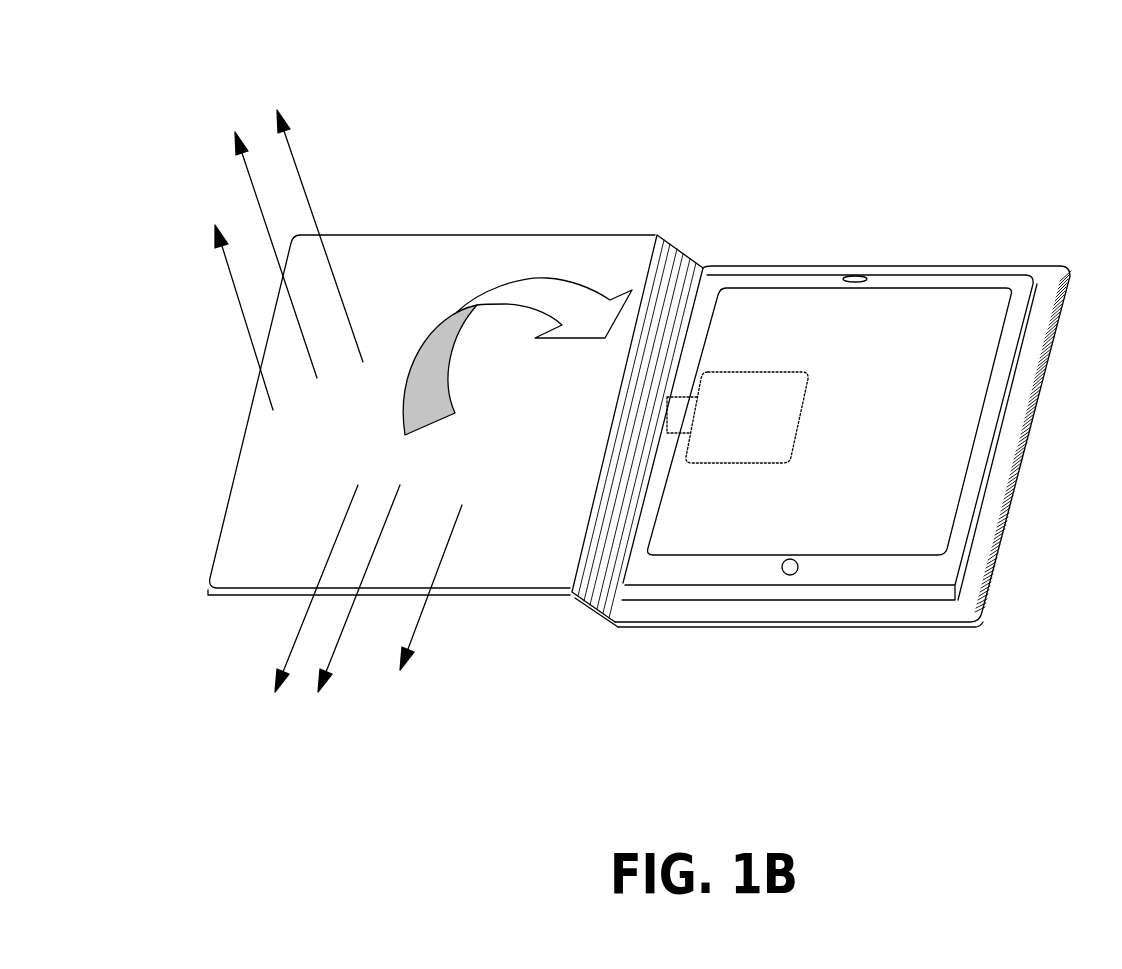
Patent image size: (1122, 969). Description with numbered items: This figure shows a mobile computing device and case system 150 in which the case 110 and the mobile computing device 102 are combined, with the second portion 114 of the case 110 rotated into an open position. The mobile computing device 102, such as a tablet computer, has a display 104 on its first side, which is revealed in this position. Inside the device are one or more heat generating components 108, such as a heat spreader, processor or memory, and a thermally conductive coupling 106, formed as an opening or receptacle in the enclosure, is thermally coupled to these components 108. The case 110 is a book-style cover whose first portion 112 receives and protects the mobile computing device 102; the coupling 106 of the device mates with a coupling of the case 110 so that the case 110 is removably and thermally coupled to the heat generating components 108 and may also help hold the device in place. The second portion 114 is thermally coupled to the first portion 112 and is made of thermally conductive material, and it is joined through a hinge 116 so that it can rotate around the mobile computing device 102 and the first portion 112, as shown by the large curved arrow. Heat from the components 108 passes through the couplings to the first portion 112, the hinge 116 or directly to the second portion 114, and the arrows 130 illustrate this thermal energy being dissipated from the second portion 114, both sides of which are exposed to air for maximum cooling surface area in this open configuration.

The mobile computing device and case system 150 is at (727, 31).
The mobile computing device 102 is at (933, 270).
The display 104 is at (852, 538).
The thermally conductive coupling 106 is at (667, 413).
The heat generating components 108 is at (727, 447).
The case 110 is at (455, 421).
The first portion 112 is at (800, 270).
The second portion 114 is at (353, 265).
The hinge 116 is at (582, 603).
The arrows 130 is at (315, 547).